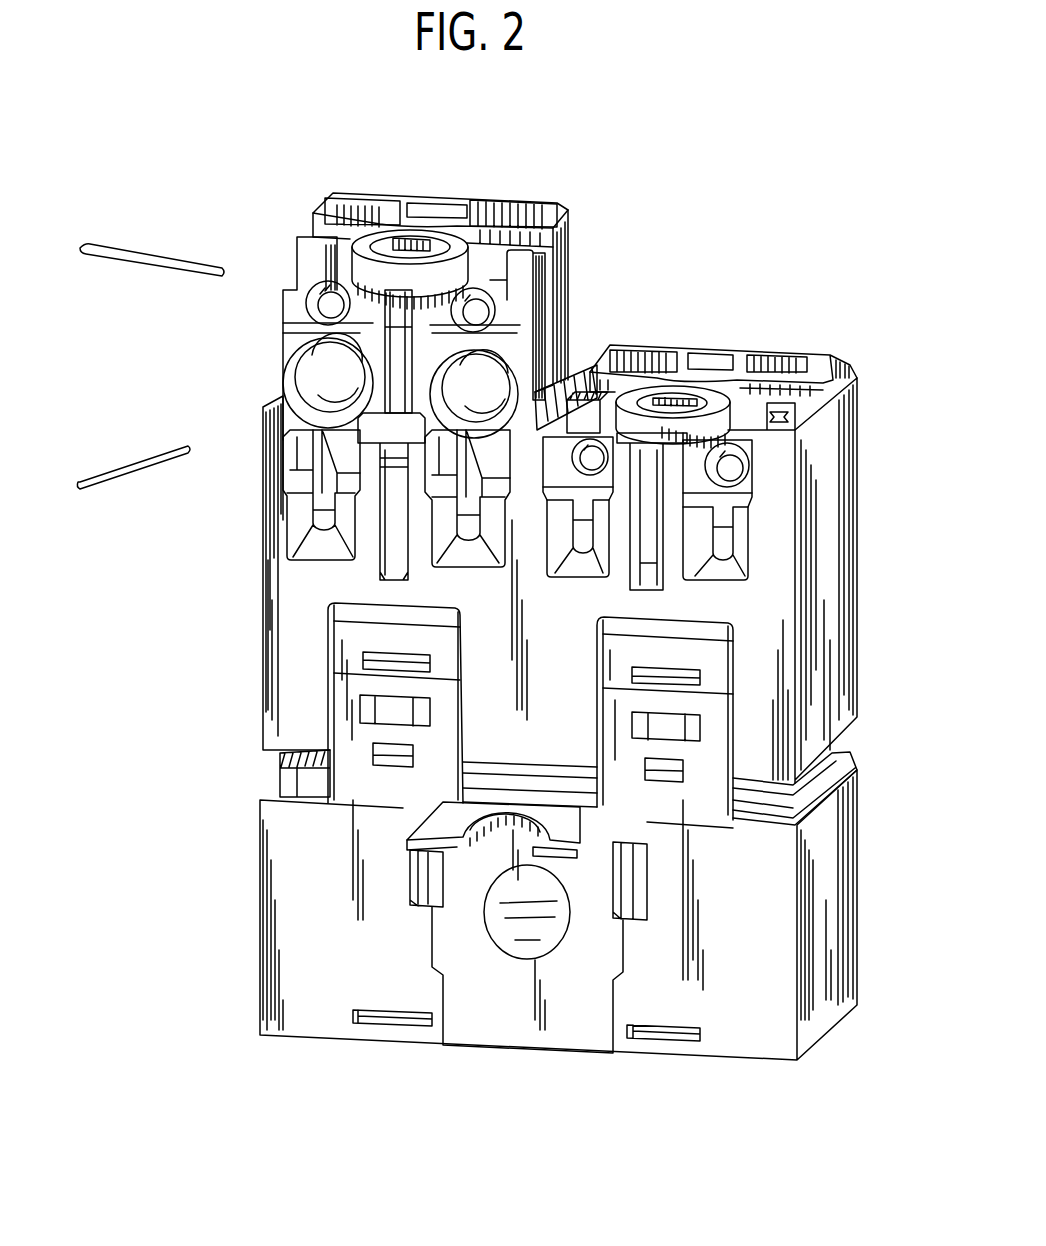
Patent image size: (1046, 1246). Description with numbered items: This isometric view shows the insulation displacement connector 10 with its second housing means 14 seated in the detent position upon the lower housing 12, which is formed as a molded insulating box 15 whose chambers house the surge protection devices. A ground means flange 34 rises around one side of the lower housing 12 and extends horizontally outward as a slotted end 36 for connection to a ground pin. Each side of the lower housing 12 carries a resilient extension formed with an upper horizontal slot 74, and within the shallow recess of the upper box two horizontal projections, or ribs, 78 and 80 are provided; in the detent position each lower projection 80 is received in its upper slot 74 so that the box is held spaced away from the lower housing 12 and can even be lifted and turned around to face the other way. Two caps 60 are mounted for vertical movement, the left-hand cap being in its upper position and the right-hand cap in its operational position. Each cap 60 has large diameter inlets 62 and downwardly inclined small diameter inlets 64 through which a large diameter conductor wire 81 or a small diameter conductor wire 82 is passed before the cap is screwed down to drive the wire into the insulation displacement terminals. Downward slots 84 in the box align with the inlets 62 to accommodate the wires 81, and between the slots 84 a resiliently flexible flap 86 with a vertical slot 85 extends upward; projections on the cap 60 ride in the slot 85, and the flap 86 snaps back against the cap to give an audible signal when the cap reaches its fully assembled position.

The insulation displacement connector 10 is at (832, 300).
The lower housing 12 is at (864, 932).
The second housing means 14 is at (866, 636).
The molded insulating box 15 is at (827, 855).
The flange 34 is at (478, 972).
The slotted end 36 is at (423, 831).
The cap 60 is at (413, 198).
The large diameter inlet 62 is at (313, 374).
The small diameter inlet 64 is at (326, 303).
The upper horizontal slot 74 is at (367, 702).
The upper horizontal projection 78 is at (375, 658).
The lower horizontal projection 80 is at (397, 712).
The large diameter conductor wire 81 is at (138, 460).
The small diameter conductor wire 82 is at (138, 252).
The downward slot 84 is at (317, 471).
The vertical slot 85 is at (397, 527).
The resiliently flexible flap 86 is at (663, 450).